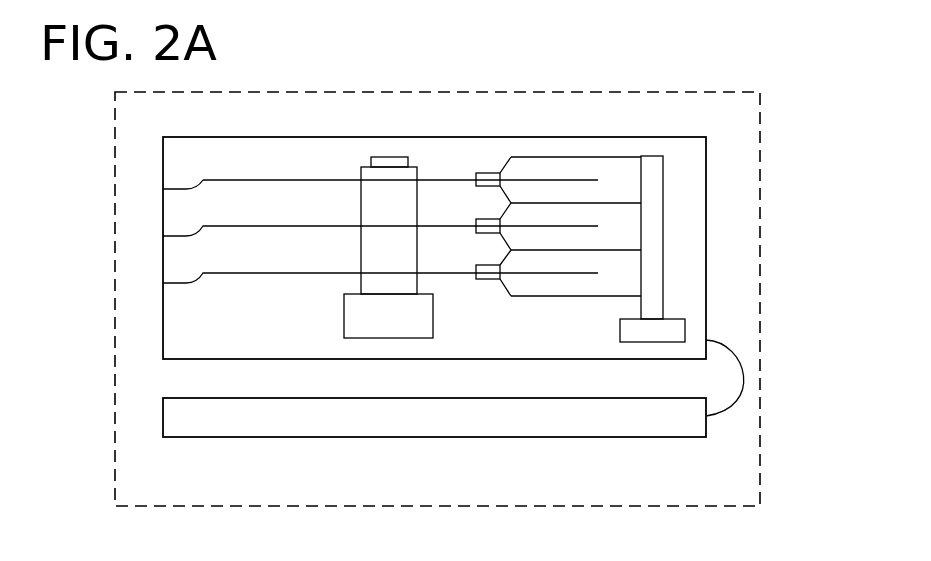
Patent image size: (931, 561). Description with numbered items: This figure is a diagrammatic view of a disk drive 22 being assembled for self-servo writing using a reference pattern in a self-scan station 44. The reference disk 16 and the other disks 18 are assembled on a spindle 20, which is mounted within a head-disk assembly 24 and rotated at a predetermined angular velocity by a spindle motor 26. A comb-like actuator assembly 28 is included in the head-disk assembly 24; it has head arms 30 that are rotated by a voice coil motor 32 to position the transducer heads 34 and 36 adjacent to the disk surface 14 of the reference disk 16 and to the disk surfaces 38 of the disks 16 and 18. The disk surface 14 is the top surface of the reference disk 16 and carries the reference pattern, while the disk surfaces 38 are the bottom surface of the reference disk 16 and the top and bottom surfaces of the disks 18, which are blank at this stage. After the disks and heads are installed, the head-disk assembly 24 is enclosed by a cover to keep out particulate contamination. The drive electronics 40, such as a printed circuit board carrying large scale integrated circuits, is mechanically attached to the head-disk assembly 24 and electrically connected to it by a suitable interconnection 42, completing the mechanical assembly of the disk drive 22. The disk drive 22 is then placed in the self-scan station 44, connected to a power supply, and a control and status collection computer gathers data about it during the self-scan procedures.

The disk surface 14 is at (272, 180).
The reference disk 16 is at (163, 189).
The disks 18 is at (163, 236).
The spindle 20 is at (380, 157).
The disk drive 22 is at (719, 226).
The head-disk assembly 24 is at (163, 147).
The spindle motor 26 is at (344, 318).
The comb-like actuator assembly 28 is at (656, 172).
The head arms 30 is at (632, 200).
The voice coil motor 32 is at (685, 328).
The transducer head 34 is at (482, 173).
The transducer heads 36 is at (476, 184).
The disk surfaces 38 is at (272, 182).
The drive electronics 40 is at (615, 437).
The interconnection 42 is at (745, 388).
The self-scan station 44 is at (465, 506).